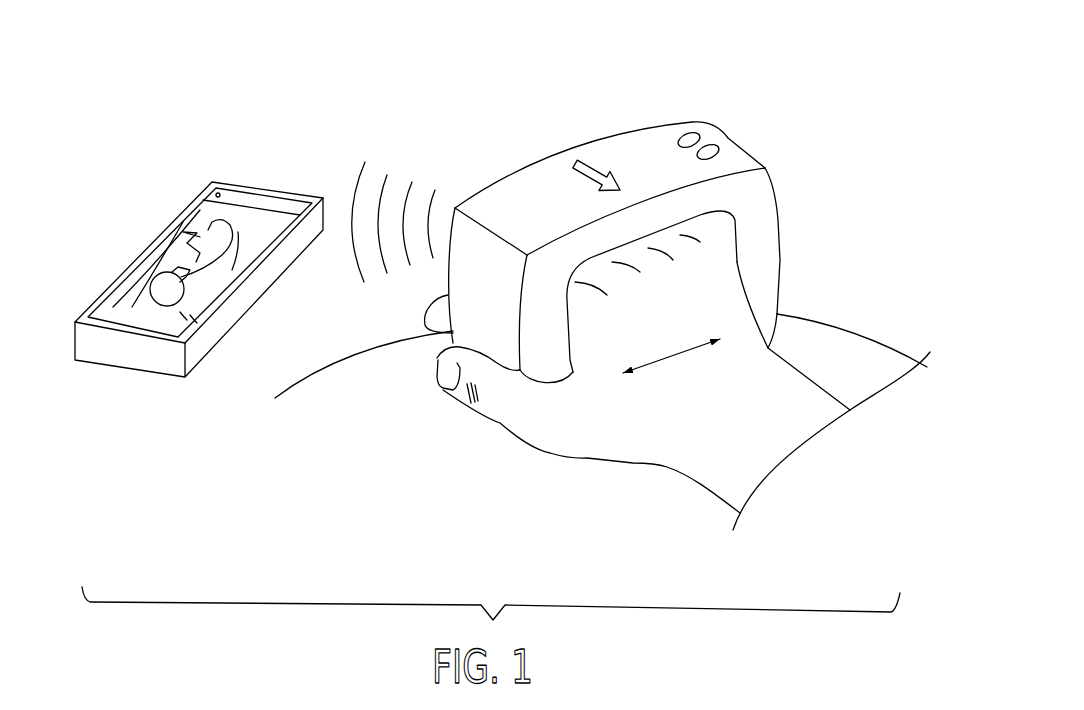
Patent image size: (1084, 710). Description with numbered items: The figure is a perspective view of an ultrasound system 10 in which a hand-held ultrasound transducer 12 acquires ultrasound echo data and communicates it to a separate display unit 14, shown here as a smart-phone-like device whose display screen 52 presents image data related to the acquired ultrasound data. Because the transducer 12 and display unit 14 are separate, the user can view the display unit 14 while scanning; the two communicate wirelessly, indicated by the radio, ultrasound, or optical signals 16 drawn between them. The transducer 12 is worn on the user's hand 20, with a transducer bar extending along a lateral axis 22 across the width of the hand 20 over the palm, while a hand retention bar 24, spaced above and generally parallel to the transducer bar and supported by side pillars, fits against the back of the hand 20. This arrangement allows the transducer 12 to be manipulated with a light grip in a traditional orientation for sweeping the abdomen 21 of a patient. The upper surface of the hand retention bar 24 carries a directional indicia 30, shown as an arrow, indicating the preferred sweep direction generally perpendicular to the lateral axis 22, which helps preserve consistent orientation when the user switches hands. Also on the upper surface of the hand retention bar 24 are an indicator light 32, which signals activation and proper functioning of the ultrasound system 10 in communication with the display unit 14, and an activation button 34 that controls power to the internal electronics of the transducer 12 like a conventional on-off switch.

The ultrasound system 10 is at (758, 128).
The ultrasound transducer 12 is at (557, 125).
The display unit 14 is at (265, 178).
The signals 16 is at (387, 175).
The user's hand 20 is at (600, 442).
The abdomen 21 is at (376, 435).
The lateral axis 22 is at (677, 357).
The hand retention bar 24 is at (665, 210).
The directional indicia 30 is at (575, 164).
The indicator light 32 is at (688, 132).
The activation button 34 is at (712, 147).
The display screen 52 is at (163, 213).